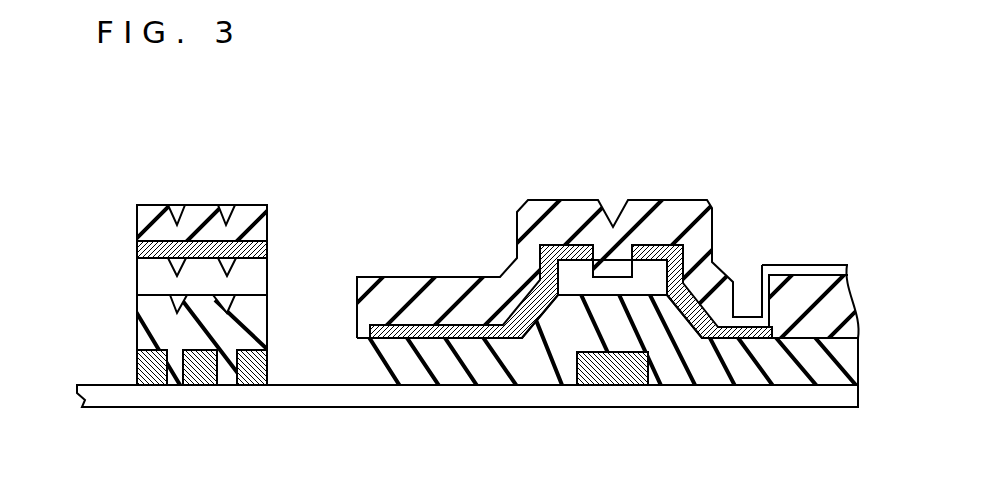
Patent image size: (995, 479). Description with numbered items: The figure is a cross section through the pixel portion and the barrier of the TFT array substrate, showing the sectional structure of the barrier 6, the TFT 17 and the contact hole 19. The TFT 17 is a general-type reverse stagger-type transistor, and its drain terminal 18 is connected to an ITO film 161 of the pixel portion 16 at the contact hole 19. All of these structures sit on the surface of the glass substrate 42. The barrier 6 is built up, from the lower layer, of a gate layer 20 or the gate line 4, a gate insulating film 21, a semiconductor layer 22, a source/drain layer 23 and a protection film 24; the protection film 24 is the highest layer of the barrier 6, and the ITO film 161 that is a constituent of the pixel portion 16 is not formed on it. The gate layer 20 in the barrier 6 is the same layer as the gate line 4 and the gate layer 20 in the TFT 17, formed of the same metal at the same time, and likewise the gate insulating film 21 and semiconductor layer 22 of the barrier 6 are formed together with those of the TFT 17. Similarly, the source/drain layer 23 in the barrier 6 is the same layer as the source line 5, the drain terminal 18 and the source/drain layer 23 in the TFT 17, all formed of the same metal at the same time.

The gate line 4 is at (203, 388).
The source line 5 is at (400, 325).
The barrier 6 is at (134, 193).
The pixel portion 16 is at (762, 251).
The TFT 17 is at (540, 172).
The drain terminal 18 is at (703, 338).
The contact hole 19 is at (749, 274).
The gate layer 20 is at (145, 388).
The gate insulating film 21 is at (147, 332).
The semiconductor layer 22 is at (147, 282).
The source/drain layer 23 is at (147, 247).
The protection film 24 is at (147, 217).
The glass substrate 42 is at (491, 396).
The ITO film 161 is at (848, 268).